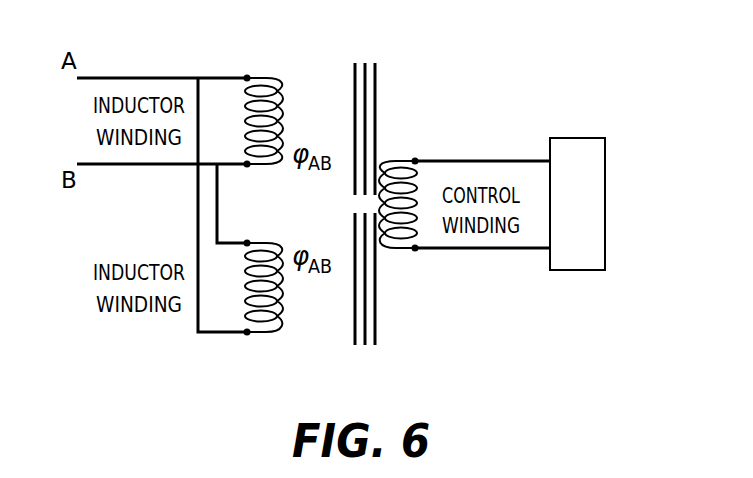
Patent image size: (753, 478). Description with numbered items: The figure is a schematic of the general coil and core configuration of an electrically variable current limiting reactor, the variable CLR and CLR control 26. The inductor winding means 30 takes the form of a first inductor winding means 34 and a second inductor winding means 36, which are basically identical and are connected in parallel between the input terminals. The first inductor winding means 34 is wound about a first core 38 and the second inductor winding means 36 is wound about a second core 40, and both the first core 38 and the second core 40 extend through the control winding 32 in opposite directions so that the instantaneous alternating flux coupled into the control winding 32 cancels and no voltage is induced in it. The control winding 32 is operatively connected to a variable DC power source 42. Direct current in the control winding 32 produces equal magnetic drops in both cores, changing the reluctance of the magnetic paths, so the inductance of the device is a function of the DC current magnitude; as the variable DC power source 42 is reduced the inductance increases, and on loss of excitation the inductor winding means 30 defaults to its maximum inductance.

The variable CLR and CLR control 26 is at (398, 203).
The inductor winding means 30 is at (279, 79).
The control winding 32 is at (392, 160).
The first inductor winding means 34 is at (283, 106).
The second inductor winding means 36 is at (281, 279).
The first core 38 is at (376, 83).
The second core 40 is at (376, 327).
The variable DC power source 42 is at (589, 219).